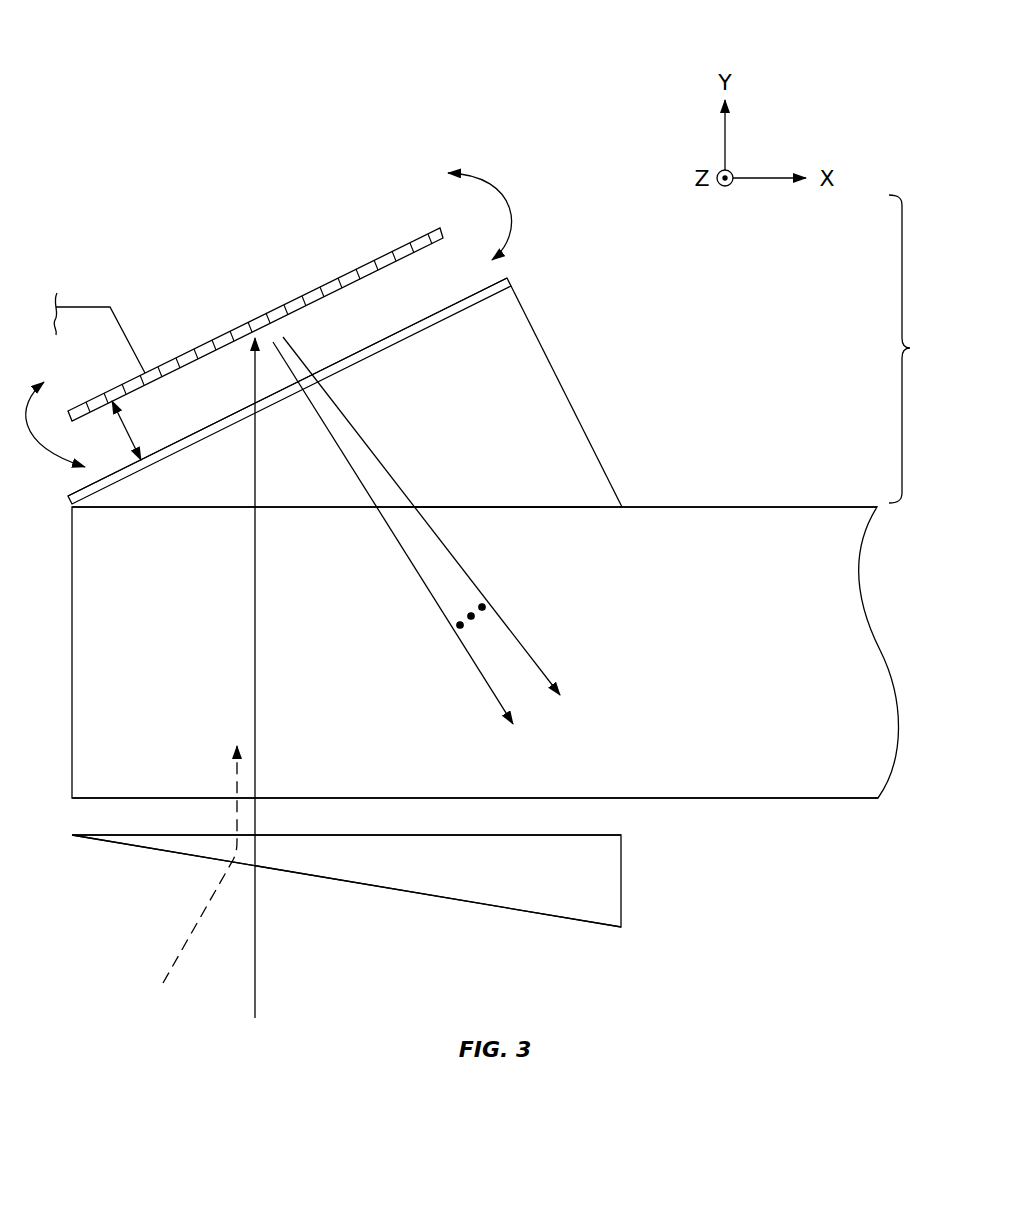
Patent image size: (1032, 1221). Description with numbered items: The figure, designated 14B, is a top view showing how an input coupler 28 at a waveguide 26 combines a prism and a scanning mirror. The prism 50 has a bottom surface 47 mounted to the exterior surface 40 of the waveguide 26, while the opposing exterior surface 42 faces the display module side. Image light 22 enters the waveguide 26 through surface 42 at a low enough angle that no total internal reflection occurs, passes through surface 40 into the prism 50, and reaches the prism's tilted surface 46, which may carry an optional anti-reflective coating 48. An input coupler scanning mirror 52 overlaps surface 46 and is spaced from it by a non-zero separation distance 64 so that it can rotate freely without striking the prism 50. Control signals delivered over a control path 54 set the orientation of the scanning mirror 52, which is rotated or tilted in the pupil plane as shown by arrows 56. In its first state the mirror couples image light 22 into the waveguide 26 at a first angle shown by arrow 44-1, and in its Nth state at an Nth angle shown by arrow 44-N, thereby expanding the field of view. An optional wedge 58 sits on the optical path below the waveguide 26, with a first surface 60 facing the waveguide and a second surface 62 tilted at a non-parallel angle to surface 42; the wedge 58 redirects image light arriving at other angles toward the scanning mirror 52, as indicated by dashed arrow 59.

The display module 14B is at (516, 61).
The image light 22 is at (257, 993).
The waveguide 26 is at (757, 515).
The input coupler 28 is at (915, 349).
The exterior surface 40 is at (670, 511).
The exterior surface 42 is at (770, 795).
The arrow 44-1 is at (410, 560).
The arrow 44-N is at (457, 562).
The surface 46 is at (428, 337).
The bottom surface 47 is at (496, 505).
The coating 48 is at (509, 283).
The prism 50 is at (569, 400).
The input coupler scanning mirror 52 is at (376, 262).
The control path 54 is at (91, 306).
The arrows 56 is at (508, 202).
The wedge 58 is at (623, 878).
The dashed arrow 59 is at (190, 932).
The first surface 60 is at (482, 839).
The second surface 62 is at (480, 907).
The separation distance 64 is at (127, 430).